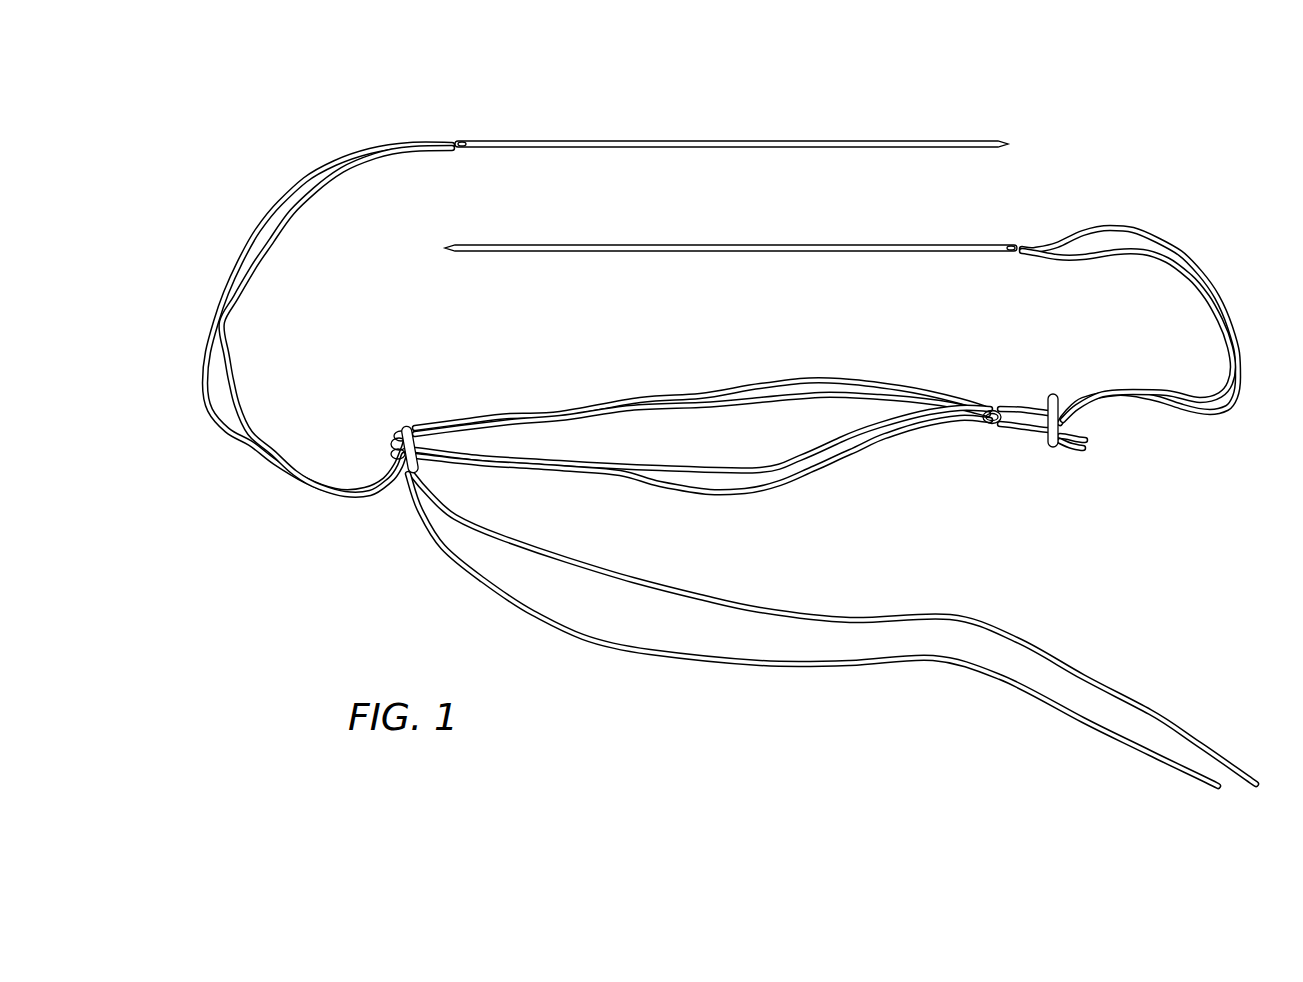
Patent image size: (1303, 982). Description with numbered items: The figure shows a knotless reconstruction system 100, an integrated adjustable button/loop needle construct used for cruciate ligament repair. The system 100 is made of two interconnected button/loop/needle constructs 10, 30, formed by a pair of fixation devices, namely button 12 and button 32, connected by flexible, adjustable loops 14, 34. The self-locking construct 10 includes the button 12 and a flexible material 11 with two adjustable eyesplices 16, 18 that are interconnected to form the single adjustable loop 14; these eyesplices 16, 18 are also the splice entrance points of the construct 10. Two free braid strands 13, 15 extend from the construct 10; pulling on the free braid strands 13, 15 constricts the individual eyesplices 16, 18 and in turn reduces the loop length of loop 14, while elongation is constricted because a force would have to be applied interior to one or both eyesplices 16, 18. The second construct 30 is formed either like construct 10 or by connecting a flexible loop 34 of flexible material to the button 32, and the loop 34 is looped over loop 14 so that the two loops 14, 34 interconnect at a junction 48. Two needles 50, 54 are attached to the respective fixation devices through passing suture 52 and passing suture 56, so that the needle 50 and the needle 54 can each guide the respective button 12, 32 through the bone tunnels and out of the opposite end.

The knotless reconstruction system 100 is at (1162, 126).
The self-locking button/loop/needle construct 10 is at (708, 413).
The flexible material 11 is at (768, 403).
The button 12 is at (406, 424).
The free braid strand 13 is at (1110, 720).
The adjustable loop 14 is at (850, 462).
The free braid strand 15 is at (1117, 690).
The adjustable eyesplice 16 is at (453, 424).
The adjustable eyesplice 18 is at (460, 462).
The self-locking knotless button/loop/needle construct 30 is at (1042, 417).
The button 32 is at (1057, 447).
The flexible loop 34 is at (1020, 430).
The splice/loop junction 48 is at (960, 405).
The needle 50 is at (673, 148).
The passing suture 52 is at (261, 224).
The needle 54 is at (653, 253).
The passing suture 56 is at (1173, 247).